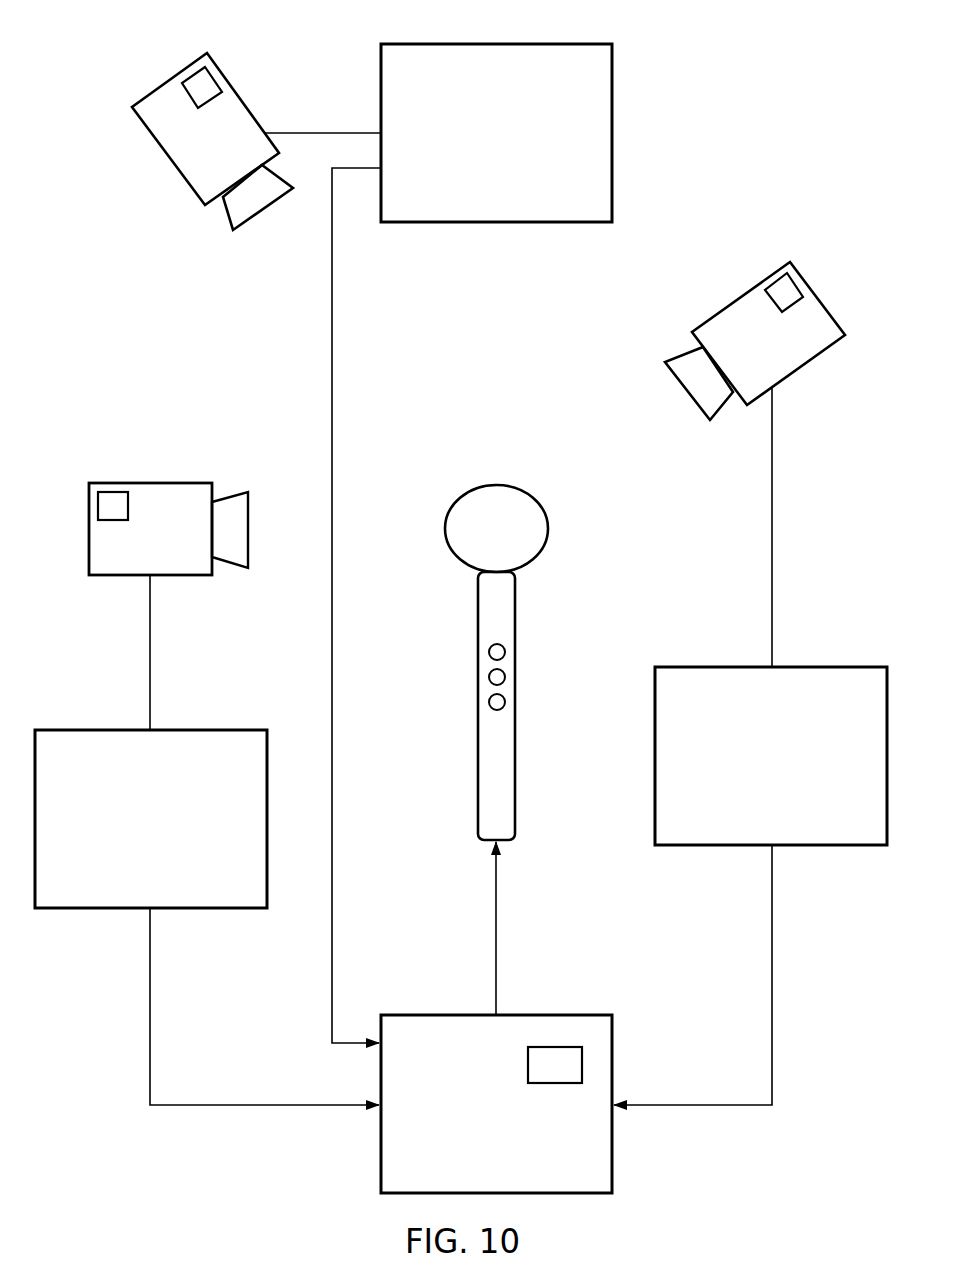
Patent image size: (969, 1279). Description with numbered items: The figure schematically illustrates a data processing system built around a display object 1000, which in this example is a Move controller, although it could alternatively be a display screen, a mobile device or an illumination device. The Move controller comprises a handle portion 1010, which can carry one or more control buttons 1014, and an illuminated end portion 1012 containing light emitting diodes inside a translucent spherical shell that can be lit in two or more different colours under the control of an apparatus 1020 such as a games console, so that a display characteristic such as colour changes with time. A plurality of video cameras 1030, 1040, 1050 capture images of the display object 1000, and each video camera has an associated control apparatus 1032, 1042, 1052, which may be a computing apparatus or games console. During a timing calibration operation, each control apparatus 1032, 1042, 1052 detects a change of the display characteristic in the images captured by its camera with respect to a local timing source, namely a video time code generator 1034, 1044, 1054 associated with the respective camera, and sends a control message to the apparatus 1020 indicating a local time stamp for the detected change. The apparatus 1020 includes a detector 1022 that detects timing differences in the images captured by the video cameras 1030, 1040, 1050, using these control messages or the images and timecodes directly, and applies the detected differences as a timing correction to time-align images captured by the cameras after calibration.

The display object 1000 is at (537, 662).
The handle portion 1010 is at (505, 718).
The illuminated end portion 1012 is at (548, 528).
The control buttons 1014 is at (505, 652).
The apparatus 1020 is at (558, 998).
The detector 1022 is at (583, 1065).
The video camera 1030 is at (163, 158).
The control apparatus 1032 is at (523, 27).
The video time code generator 1034 is at (212, 82).
The video camera 1040 is at (172, 458).
The control apparatus 1042 is at (213, 710).
The video time code generator 1044 is at (112, 492).
The video camera 1050 is at (802, 368).
The control apparatus 1052 is at (835, 648).
The video time code generator 1054 is at (795, 287).